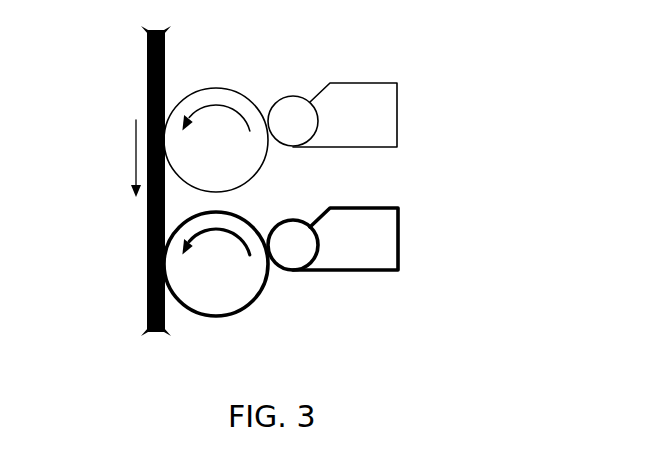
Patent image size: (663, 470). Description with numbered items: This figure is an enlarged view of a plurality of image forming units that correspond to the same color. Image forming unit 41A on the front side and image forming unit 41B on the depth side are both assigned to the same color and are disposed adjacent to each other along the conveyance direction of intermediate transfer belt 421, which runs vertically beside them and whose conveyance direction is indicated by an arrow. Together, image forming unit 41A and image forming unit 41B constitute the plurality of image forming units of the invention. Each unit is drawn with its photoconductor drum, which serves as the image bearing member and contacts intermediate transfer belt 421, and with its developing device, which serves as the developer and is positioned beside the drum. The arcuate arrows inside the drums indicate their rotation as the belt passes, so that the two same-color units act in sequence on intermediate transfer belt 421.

The intermediate transfer belt 421 is at (146, 271).
The image forming unit on the depth side 41B is at (405, 117).
The image forming unit on the front side 41A is at (405, 242).